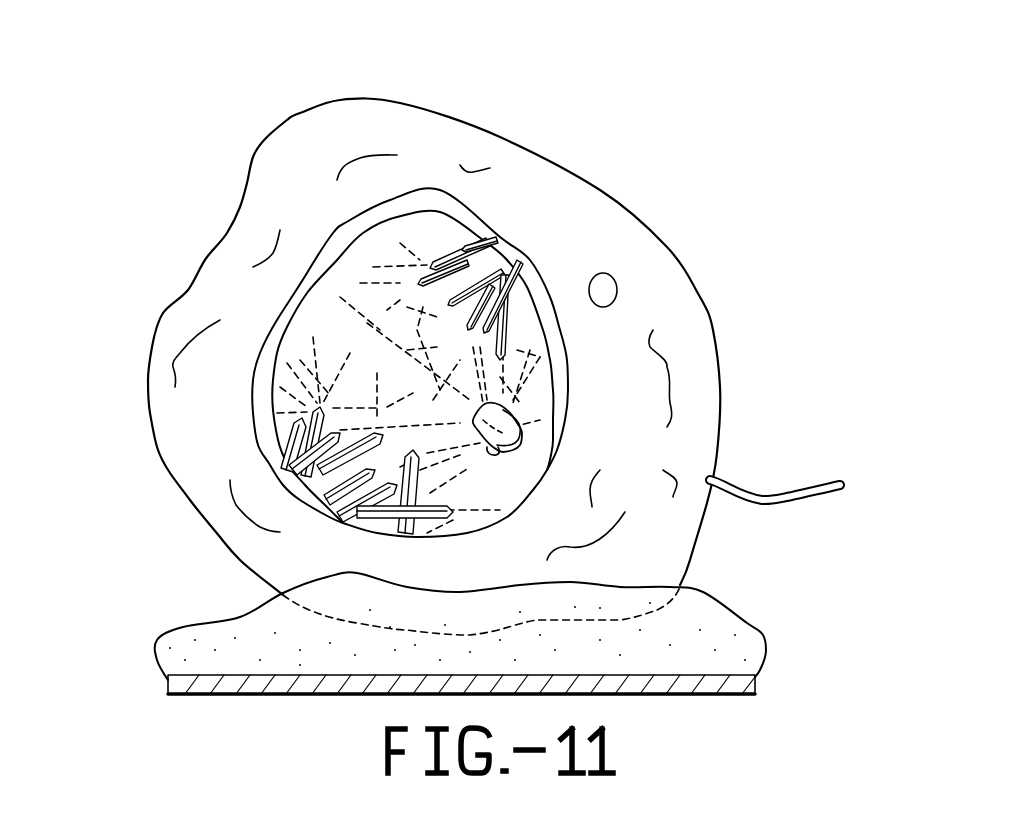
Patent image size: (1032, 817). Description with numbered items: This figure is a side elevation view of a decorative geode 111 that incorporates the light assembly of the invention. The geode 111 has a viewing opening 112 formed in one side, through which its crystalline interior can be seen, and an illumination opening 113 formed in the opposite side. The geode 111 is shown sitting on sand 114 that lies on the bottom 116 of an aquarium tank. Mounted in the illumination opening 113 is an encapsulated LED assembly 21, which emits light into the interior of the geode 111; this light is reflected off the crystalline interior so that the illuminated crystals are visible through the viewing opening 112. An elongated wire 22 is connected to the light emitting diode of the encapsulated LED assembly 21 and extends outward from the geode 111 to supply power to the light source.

The geode 111 is at (665, 213).
The viewing opening 112 is at (371, 266).
The encapsulated LED assembly 21 is at (516, 408).
The illumination opening 113 is at (500, 455).
The elongated wire 22 is at (780, 493).
The sand 114 is at (183, 627).
The bottom 116 is at (715, 695).